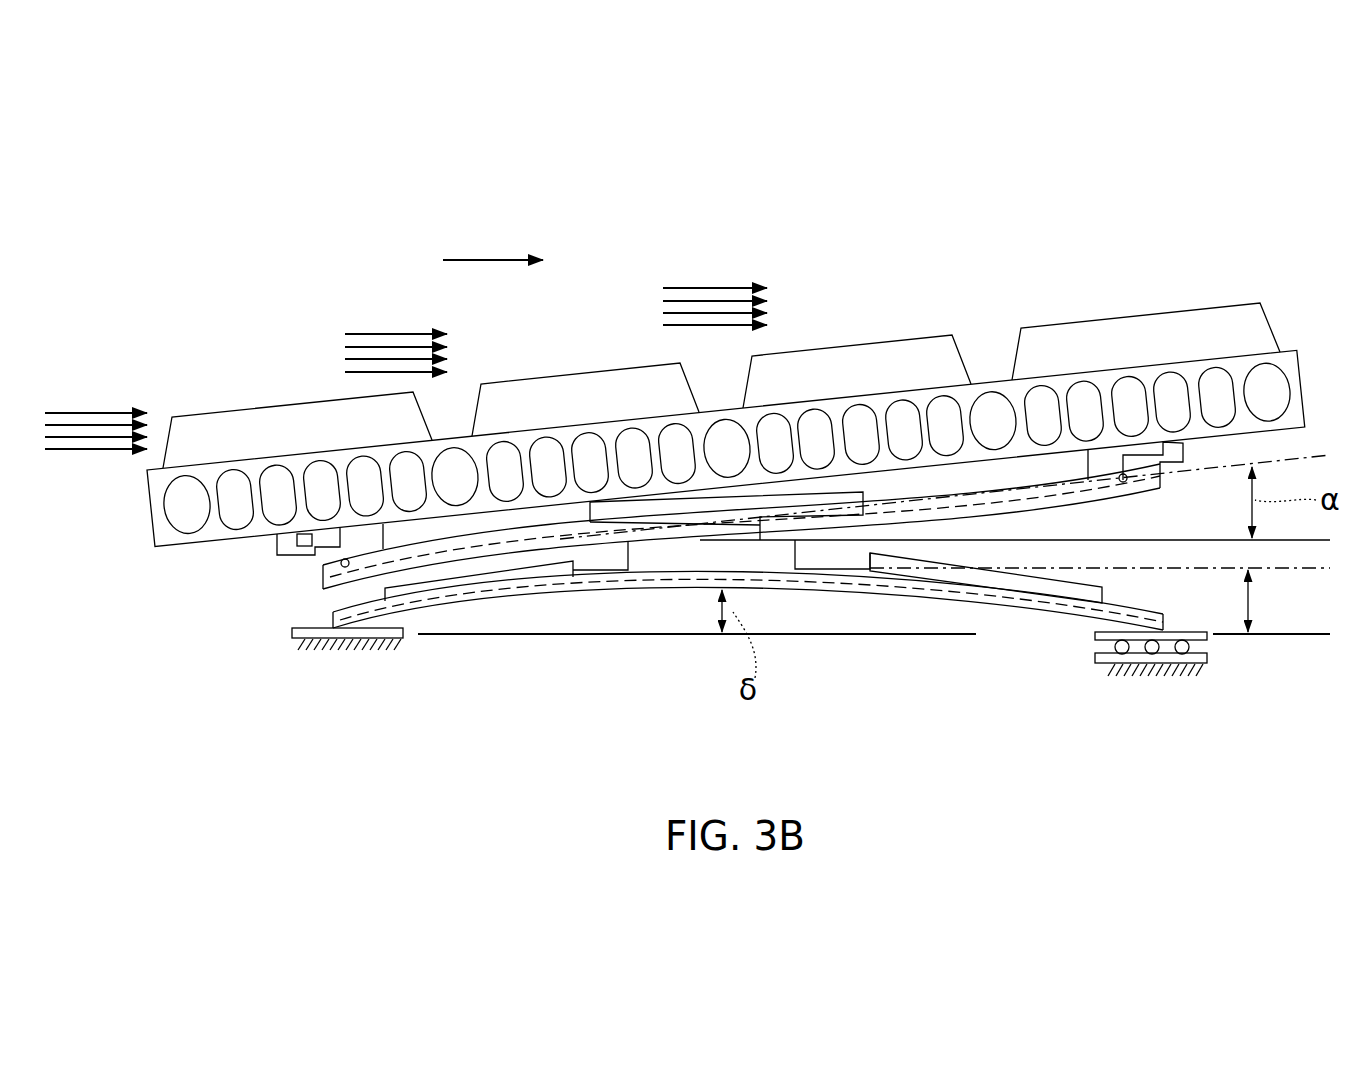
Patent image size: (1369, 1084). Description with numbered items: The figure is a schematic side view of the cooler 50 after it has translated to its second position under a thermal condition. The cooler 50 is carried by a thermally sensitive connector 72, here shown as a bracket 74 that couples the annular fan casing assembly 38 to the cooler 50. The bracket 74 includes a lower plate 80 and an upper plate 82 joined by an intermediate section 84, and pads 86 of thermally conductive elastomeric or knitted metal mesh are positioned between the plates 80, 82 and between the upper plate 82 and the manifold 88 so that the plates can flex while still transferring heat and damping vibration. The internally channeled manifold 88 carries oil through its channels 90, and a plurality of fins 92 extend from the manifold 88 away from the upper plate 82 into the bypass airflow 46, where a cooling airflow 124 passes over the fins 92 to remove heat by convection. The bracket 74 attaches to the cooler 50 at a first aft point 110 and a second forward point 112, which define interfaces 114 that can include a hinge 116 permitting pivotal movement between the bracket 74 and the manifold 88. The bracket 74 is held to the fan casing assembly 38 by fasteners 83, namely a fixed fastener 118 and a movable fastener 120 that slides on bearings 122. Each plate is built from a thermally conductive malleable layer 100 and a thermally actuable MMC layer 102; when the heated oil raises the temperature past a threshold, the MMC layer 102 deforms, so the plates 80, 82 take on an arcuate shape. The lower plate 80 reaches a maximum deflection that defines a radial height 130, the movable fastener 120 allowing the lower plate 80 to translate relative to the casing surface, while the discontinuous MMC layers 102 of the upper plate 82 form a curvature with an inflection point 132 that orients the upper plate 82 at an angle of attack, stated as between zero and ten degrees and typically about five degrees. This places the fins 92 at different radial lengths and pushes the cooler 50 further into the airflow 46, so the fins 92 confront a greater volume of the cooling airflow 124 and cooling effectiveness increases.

The annular fan casing assembly 38 is at (368, 643).
The second portion of the airflow 46 is at (497, 258).
The cooler 50 is at (148, 205).
The thermally sensitive connector 72 is at (278, 636).
The bracket 74 is at (315, 592).
The lower plate 80 is at (889, 616).
The upper plate 82 is at (1105, 511).
The fasteners 83 is at (312, 662).
The intermediate section 84 is at (780, 567).
The pads 86 is at (860, 500).
The manifold 88 is at (148, 483).
The channels 90 is at (1170, 395).
The fins 92 is at (275, 425).
The malleable layer 100 is at (600, 563).
The MMC layer 102 is at (440, 600).
The first aft point 110 is at (1180, 437).
The second forward point 112 is at (272, 527).
The interfaces 114 is at (277, 552).
The hinge 116 is at (323, 567).
The fixed fastener 118 is at (400, 640).
The movable fastener 120 is at (1105, 657).
The bearings 122 is at (1190, 647).
The cooling airflow 124 is at (85, 412).
The radial height 130 is at (1250, 600).
The inflection point 132 is at (713, 535).